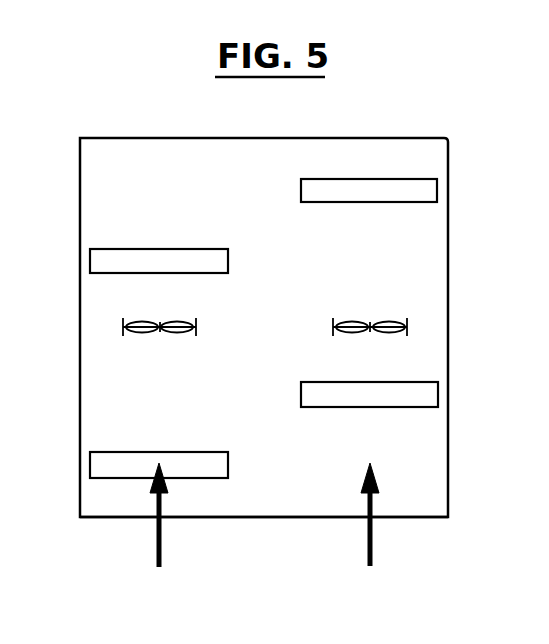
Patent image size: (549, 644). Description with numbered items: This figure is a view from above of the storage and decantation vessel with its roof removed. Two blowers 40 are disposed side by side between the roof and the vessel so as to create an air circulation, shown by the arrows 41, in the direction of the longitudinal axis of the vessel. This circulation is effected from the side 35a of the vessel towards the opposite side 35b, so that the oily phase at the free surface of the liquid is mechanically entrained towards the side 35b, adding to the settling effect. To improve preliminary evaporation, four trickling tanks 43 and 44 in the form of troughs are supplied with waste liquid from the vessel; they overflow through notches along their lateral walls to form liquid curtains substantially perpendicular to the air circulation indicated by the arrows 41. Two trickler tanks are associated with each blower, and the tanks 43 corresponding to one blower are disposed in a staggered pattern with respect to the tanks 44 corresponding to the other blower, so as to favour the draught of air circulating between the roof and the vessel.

The side of the vessel 35a is at (127, 517).
The opposite side of the vessel 35b is at (137, 138).
The blower 40 is at (173, 330).
The arrows 41 is at (163, 533).
The trickling tanks 43 is at (115, 260).
The trickling tanks 44 is at (378, 190).